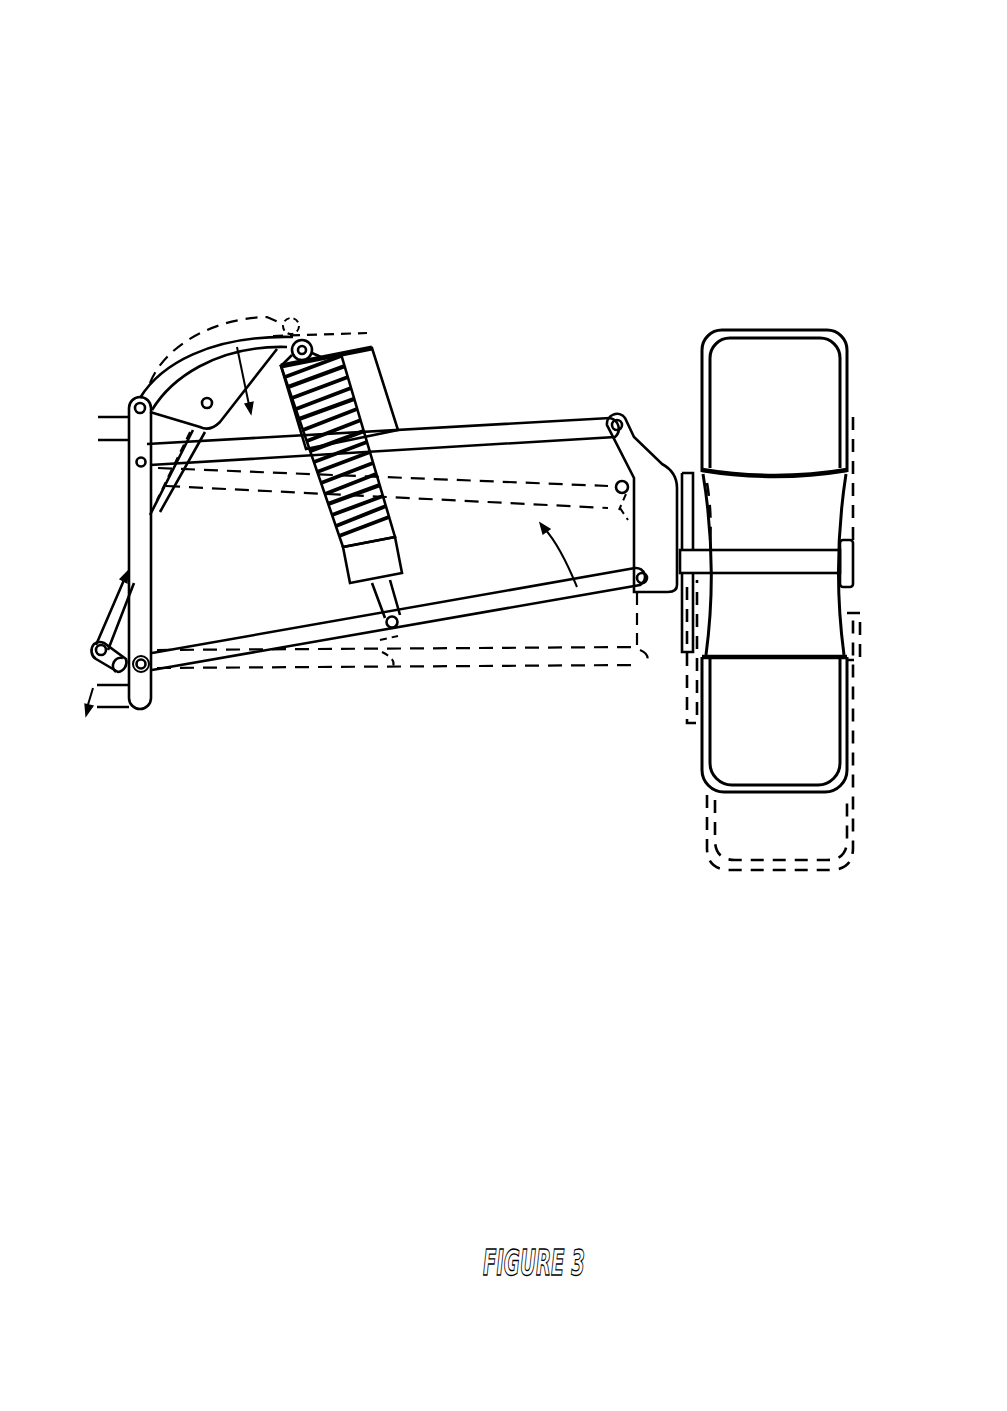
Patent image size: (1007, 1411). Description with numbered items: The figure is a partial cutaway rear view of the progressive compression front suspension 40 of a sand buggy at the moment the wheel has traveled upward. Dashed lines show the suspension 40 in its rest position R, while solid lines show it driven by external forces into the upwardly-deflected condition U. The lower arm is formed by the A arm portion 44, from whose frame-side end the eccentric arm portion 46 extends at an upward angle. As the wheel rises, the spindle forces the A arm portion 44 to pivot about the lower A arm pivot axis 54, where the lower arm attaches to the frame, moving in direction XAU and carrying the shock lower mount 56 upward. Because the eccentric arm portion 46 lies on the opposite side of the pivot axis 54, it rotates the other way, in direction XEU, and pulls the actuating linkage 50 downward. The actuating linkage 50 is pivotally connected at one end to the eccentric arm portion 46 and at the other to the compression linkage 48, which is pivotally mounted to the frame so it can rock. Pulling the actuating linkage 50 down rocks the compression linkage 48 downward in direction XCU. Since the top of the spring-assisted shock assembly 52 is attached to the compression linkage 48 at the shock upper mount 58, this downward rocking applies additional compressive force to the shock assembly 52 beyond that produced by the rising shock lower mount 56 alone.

The progressive compression front suspension 40 is at (186, 165).
The A arm portion 44 is at (472, 612).
The eccentric arm portion 46 is at (93, 612).
The compression linkage 48 is at (183, 328).
The actuating linkage 50 is at (157, 523).
The shock assembly 52 is at (407, 407).
The lower A arm pivot axis 54 is at (160, 683).
The shock lower mount 56 is at (374, 640).
The shock upper mount 58 is at (336, 317).
The upwardly-deflected condition U is at (767, 330).
The rest position R is at (802, 870).
The direction of compression linkage rocking XCU is at (270, 340).
The direction of eccentric arm portion movement XEU is at (93, 688).
The direction of A arm portion movement XAU is at (537, 600).